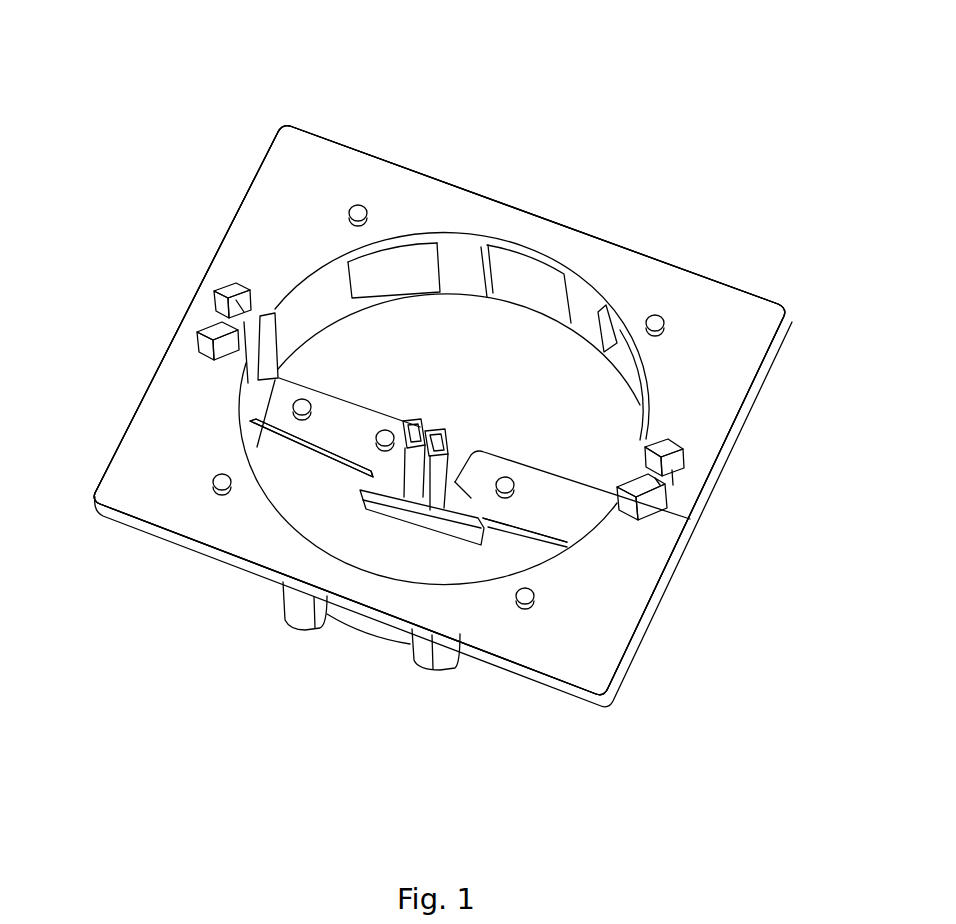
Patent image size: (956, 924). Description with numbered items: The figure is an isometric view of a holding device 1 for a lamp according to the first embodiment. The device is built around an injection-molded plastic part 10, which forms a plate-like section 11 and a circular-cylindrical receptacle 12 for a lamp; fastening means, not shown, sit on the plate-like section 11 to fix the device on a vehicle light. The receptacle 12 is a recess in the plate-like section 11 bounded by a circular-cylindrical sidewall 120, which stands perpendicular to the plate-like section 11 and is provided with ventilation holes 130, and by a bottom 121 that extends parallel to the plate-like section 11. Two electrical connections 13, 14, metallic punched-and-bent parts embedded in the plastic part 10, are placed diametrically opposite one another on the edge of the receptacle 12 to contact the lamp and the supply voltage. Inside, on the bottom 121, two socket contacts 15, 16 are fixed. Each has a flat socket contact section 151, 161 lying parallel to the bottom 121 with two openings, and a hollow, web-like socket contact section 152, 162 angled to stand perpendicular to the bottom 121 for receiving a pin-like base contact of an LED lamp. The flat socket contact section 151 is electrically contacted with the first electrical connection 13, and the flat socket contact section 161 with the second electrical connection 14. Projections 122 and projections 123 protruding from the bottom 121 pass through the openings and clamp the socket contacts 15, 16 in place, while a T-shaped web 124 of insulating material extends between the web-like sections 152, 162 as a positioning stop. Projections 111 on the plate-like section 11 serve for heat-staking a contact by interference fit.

The holding device 1 is at (585, 218).
The injection-molded plastic part 10 is at (753, 418).
The plate-like section 11 is at (275, 190).
The circular-cylindrical receptacle 12 is at (522, 338).
The first electrical connection 13 is at (222, 332).
The second electrical connection 14 is at (640, 492).
The first socket contact 15 is at (352, 392).
The second socket contact 16 is at (525, 457).
The projections of the plate-like section 111 is at (358, 203).
The circular-cylindrical sidewall 120 is at (315, 295).
The bottom 121 is at (598, 410).
The projections 122 is at (296, 402).
The projections 123 is at (598, 522).
The T-shaped web 124 is at (462, 533).
The ventilation holes 130 is at (415, 272).
The flat socket contact section 151 is at (330, 440).
The hollow, web-like socket contact section 152 is at (413, 470).
The flat socket contact section 161 is at (553, 513).
The hollow, web-like socket contact section 162 is at (437, 478).